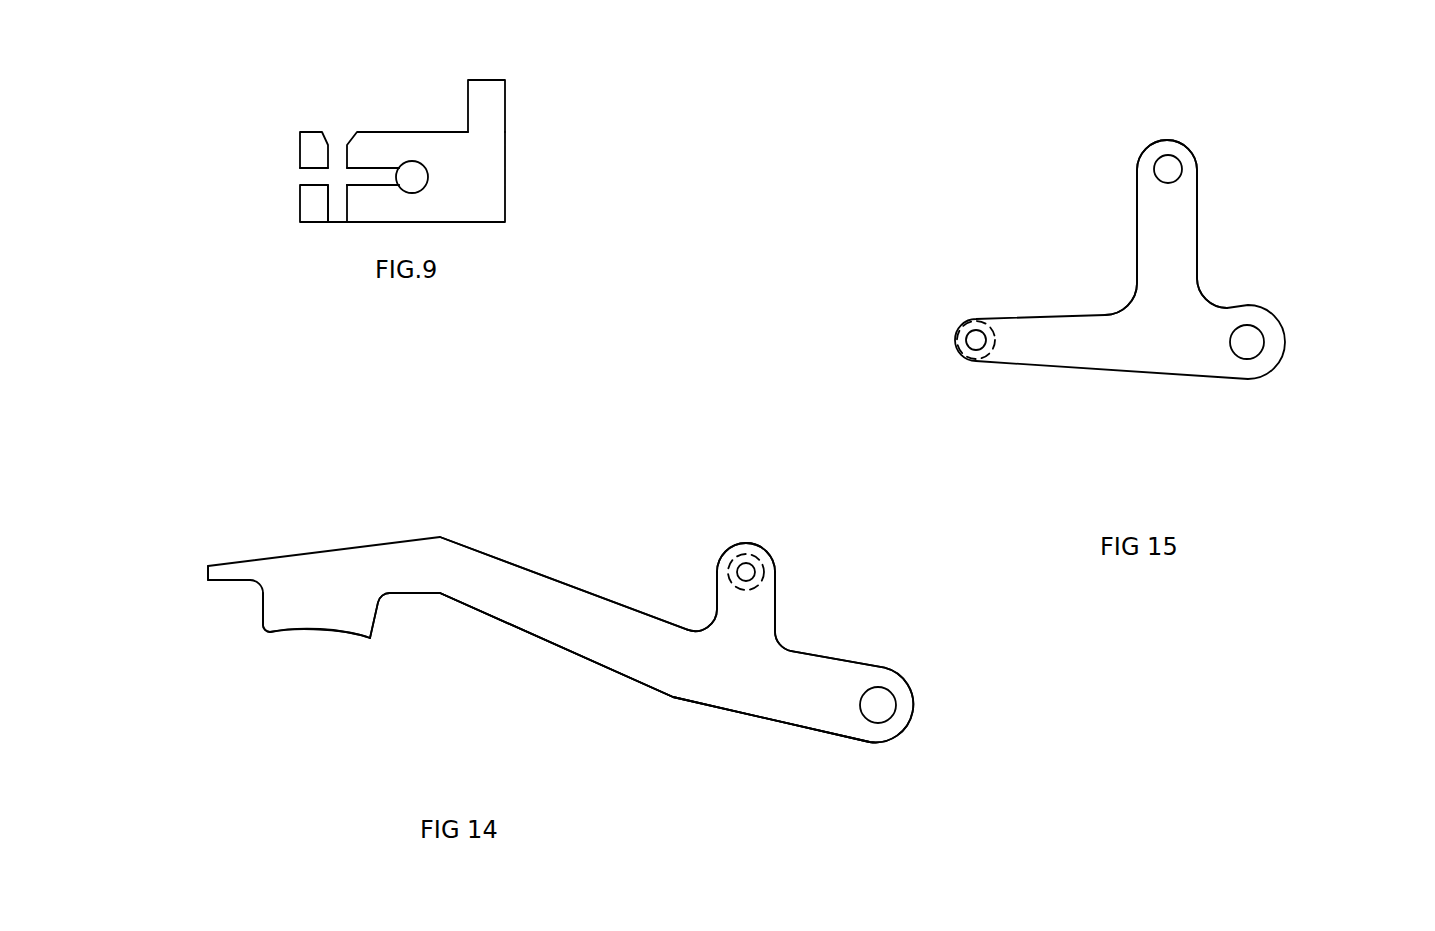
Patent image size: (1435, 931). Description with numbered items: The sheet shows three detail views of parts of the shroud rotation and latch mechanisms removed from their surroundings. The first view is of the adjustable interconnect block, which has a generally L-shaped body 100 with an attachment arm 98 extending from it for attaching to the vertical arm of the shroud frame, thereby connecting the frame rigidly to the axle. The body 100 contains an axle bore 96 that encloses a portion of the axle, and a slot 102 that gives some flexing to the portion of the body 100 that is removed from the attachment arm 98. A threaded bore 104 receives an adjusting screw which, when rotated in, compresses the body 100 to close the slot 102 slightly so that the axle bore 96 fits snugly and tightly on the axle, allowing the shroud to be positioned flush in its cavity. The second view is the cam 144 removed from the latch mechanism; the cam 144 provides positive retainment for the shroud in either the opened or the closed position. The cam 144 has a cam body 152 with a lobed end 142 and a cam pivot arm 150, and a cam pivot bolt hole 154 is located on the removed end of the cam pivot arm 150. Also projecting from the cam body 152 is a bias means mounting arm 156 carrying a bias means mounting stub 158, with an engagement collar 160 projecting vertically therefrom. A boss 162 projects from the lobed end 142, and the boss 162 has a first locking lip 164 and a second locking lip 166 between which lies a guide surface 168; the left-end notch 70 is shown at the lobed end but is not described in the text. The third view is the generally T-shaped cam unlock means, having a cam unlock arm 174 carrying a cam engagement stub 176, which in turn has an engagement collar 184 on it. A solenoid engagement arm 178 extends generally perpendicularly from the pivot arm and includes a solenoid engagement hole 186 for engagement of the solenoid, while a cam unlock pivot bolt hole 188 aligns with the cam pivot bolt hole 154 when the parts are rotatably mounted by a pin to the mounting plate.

In FIG. 9, the axle bore 96 is at (413, 180).
In FIG. 9, the attachment arm 98 is at (488, 105).
In FIG. 9, the body 100 is at (443, 157).
In FIG. 9, the slot 102 is at (317, 177).
In FIG. 9, the threaded bore 104 is at (337, 157).
In FIG. 14, the notch 70 is at (232, 571).
In FIG. 14, the lobed end 142 is at (322, 550).
In FIG. 14, the cam 144 is at (562, 622).
In FIG. 14, the cam pivot arm 150 is at (835, 712).
In FIG. 14, the cam body 152 is at (603, 667).
In FIG. 14, the cam pivot bolt hole 154 is at (890, 712).
In FIG. 14, the bias means mounting arm 156 is at (732, 612).
In FIG. 14, the bias means mounting stub 158 is at (740, 555).
In FIG. 14, the engagement collar 160 is at (746, 572).
In FIG. 14, the boss 162 is at (300, 632).
In FIG. 14, the first locking lip 164 is at (262, 628).
In FIG. 14, the second locking lip 166 is at (370, 638).
In FIG. 14, the guide surface 168 is at (322, 632).
In FIG. 15, the cam unlock arm 174 is at (1070, 355).
In FIG. 15, the cam engagement stub 176 is at (976, 340).
In FIG. 15, the solenoid engagement arm 178 is at (1170, 255).
In FIG. 15, the engagement collar 184 is at (976, 340).
In FIG. 15, the solenoid engagement hole 186 is at (1168, 169).
In FIG. 15, the cam unlock pivot bolt hole 188 is at (1247, 342).